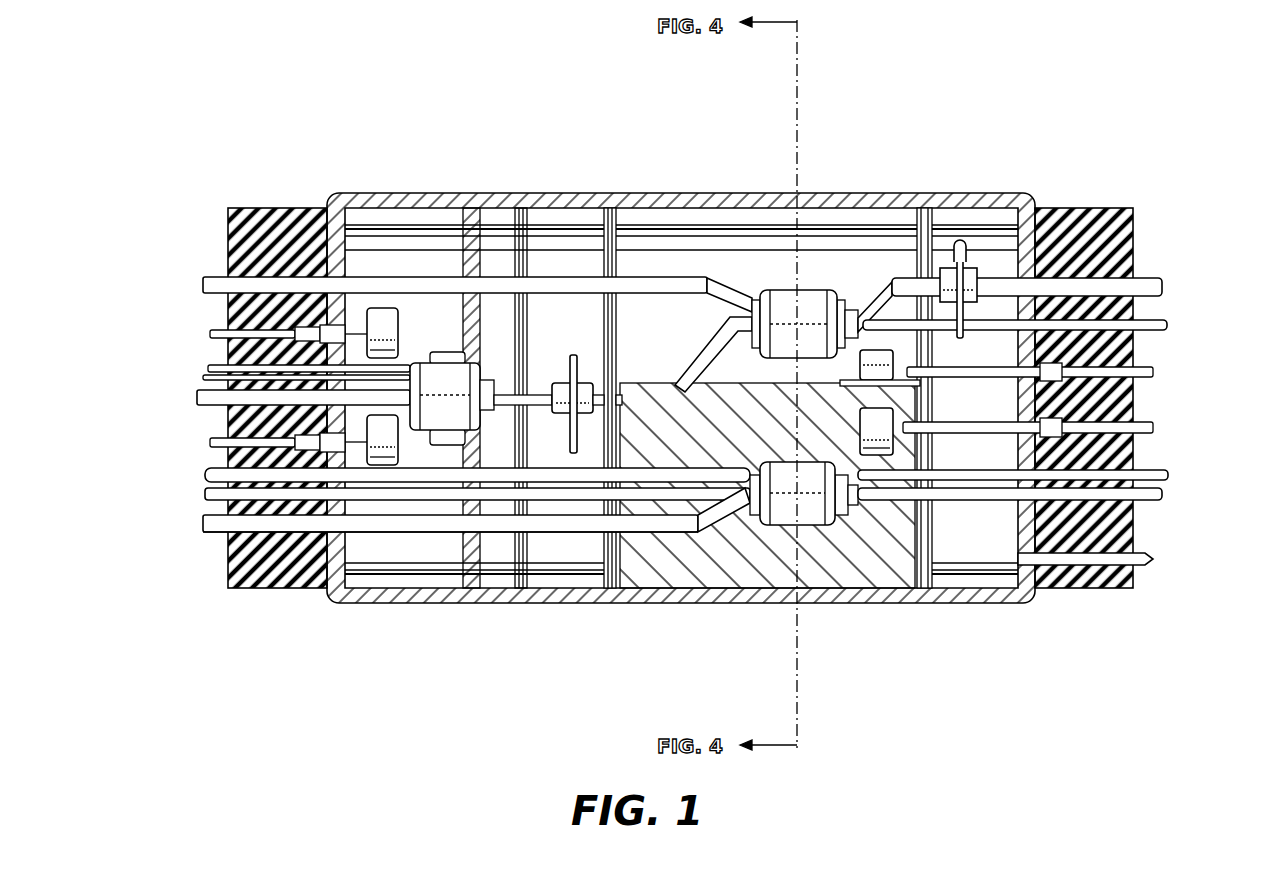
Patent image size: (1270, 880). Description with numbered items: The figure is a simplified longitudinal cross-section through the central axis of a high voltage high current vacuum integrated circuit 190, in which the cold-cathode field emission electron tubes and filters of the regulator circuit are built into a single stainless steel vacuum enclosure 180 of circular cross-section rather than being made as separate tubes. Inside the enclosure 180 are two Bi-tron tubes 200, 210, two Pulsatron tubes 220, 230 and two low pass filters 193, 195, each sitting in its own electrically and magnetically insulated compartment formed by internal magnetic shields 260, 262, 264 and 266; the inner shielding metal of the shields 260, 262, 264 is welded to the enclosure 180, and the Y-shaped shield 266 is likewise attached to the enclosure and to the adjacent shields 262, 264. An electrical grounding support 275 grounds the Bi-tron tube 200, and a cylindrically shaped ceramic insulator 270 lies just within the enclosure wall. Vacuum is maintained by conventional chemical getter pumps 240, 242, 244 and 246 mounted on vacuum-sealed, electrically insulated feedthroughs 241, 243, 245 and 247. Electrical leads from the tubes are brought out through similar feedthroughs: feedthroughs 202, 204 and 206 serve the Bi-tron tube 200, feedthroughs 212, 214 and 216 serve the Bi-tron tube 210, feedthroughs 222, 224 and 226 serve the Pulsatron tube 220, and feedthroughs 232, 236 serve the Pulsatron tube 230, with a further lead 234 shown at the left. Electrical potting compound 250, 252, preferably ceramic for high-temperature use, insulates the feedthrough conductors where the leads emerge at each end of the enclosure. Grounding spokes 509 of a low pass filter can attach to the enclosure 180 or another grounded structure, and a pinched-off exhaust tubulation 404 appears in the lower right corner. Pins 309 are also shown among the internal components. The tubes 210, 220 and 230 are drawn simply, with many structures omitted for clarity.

The high voltage high current vacuum integrated circuit 190 is at (282, 108).
The feedthrough 212 is at (215, 282).
The electrical potting compound 250 is at (255, 208).
The feedthrough 241 is at (218, 330).
The feedthrough 206 is at (213, 366).
The feedthrough 204 is at (210, 376).
The feedthrough 202 is at (205, 397).
The feedthrough 243 is at (218, 442).
The feedthrough 232 is at (208, 475).
The feedthrough 222 is at (208, 494).
The conduit 234 is at (208, 524).
The feedthrough 224 is at (215, 533).
The chemical getter pump 240 is at (380, 308).
The electrical grounding support 275 is at (470, 290).
The low pass filter 193 is at (565, 385).
The pin 309 is at (575, 355).
The vacuum enclosure 180 is at (625, 250).
The cylindrically shaped insulator 270 is at (712, 212).
The Bi-tron tube 210 is at (805, 310).
The chemical getter pump 244 is at (950, 280).
The grounding spokes 509 is at (964, 258).
The low pass filter 195 is at (932, 215).
The electrical potting compound 252 is at (1110, 215).
The feedthrough 216 is at (1165, 283).
The feedthrough 214 is at (1170, 323).
The feedthrough 245 is at (1150, 372).
The feedthrough 247 is at (1150, 428).
The feedthrough 236 is at (1168, 475).
The feedthrough 226 is at (1162, 497).
The pinched-off exhaust tubulation 404 is at (1153, 562).
The Pulsatron tube 230 is at (935, 405).
The chemical getter pump 242 is at (375, 465).
The Bi-tron tube 200 is at (440, 415).
The internal magnetic shield 260 is at (521, 600).
The internal magnetic shield 262 is at (610, 605).
The internal magnetic shield 266 is at (735, 555).
The Pulsatron tube 220 is at (815, 495).
The internal magnetic shield 264 is at (870, 455).
The chemical getter pump 246 is at (878, 460).